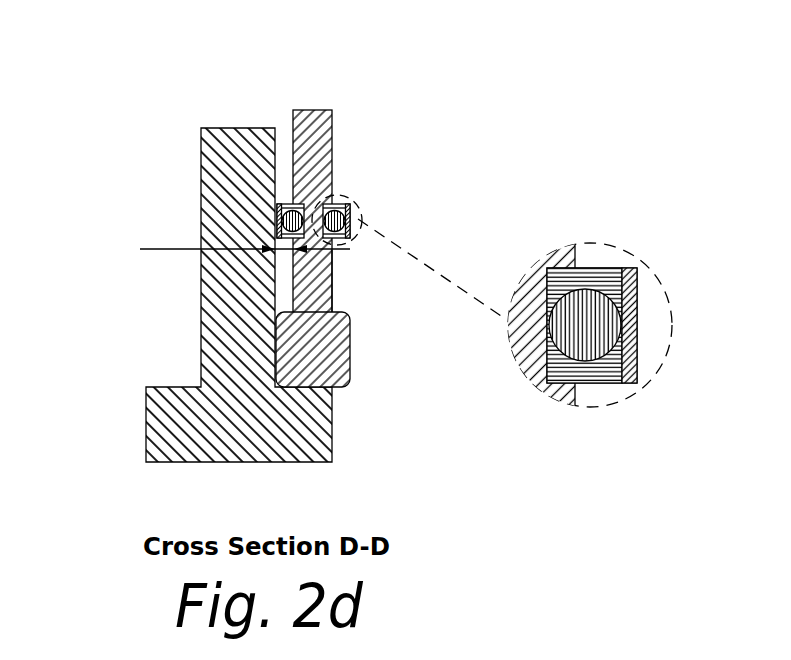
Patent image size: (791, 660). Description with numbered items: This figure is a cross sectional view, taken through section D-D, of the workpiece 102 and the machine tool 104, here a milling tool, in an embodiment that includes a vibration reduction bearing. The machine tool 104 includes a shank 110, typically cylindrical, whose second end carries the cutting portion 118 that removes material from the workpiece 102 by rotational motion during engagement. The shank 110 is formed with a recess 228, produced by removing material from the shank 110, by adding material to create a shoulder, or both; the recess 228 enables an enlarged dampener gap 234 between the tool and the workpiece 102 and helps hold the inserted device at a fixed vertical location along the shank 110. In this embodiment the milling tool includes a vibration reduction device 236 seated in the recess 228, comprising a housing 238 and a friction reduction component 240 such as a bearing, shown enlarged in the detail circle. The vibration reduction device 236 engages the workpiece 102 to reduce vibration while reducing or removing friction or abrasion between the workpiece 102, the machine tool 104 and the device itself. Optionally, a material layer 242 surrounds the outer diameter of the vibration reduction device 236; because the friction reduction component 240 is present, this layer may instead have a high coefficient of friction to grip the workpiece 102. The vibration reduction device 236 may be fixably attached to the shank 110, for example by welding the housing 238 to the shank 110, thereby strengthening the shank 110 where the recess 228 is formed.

The workpiece 102 is at (166, 158).
The machine tool 104 is at (338, 115).
The shank 110 is at (333, 273).
The cutting portion 118 is at (350, 350).
The recess 228 is at (336, 194).
The dampener gap 234 is at (218, 249).
The vibration reduction device 236 is at (351, 211).
The housing 238 is at (589, 360).
The friction reduction component 240 is at (591, 365).
The material layer 242 is at (627, 268).